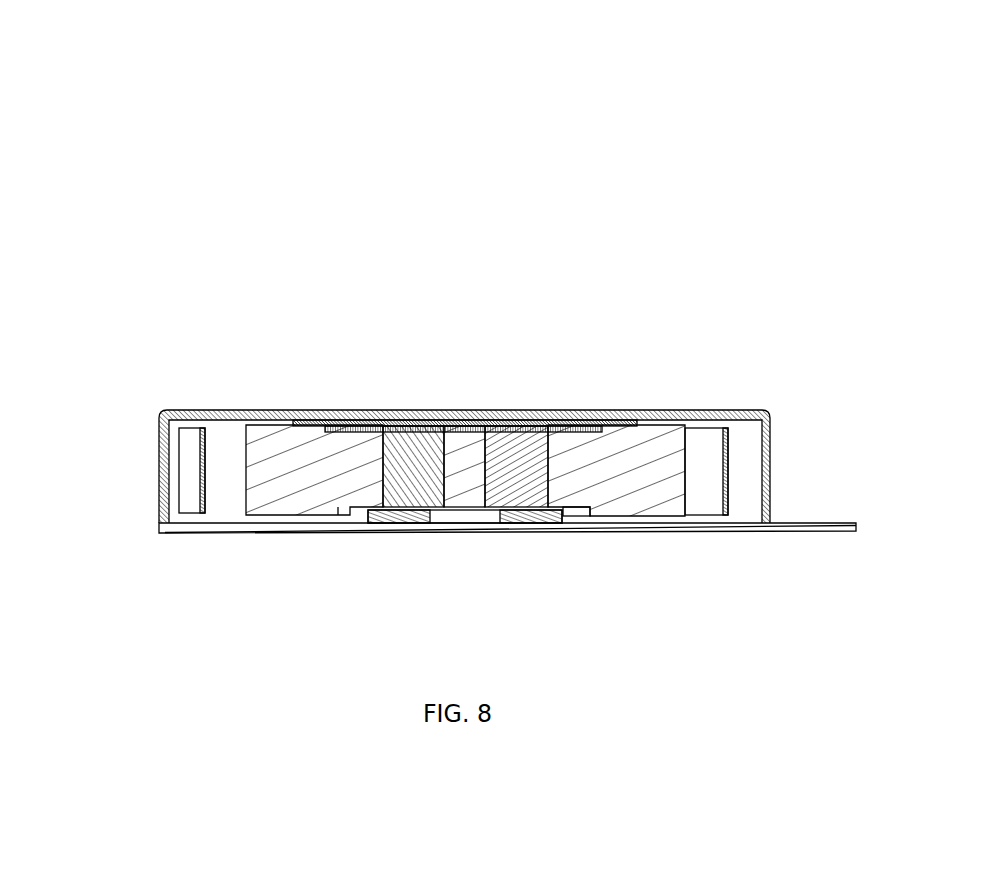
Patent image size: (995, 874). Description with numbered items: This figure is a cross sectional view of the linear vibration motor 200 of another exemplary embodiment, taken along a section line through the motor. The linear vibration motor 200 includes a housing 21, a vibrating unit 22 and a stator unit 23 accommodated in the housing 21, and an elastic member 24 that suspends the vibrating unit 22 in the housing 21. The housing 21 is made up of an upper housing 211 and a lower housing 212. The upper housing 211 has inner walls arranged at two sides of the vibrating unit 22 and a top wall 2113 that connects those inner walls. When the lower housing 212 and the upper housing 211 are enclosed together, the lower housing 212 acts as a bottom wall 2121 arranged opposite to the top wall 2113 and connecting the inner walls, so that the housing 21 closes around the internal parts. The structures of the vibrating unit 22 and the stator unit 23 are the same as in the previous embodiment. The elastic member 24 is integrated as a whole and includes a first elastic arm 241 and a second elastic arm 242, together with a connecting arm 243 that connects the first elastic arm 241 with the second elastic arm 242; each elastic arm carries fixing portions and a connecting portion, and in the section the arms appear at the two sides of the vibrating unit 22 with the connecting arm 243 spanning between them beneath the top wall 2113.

The linear vibration motor 200 is at (462, 55).
The housing 21 is at (63, 427).
The upper housing 211 is at (158, 477).
The top wall 2113 is at (728, 410).
The lower housing 212 is at (177, 532).
The bottom wall 2121 is at (256, 523).
The elastic member 24 is at (640, 331).
The first elastic arm 241 is at (707, 455).
The second elastic arm 242 is at (222, 447).
The connecting arm 243 is at (332, 410).
The stator unit 23 is at (410, 518).
The vibrating unit 22 is at (577, 512).